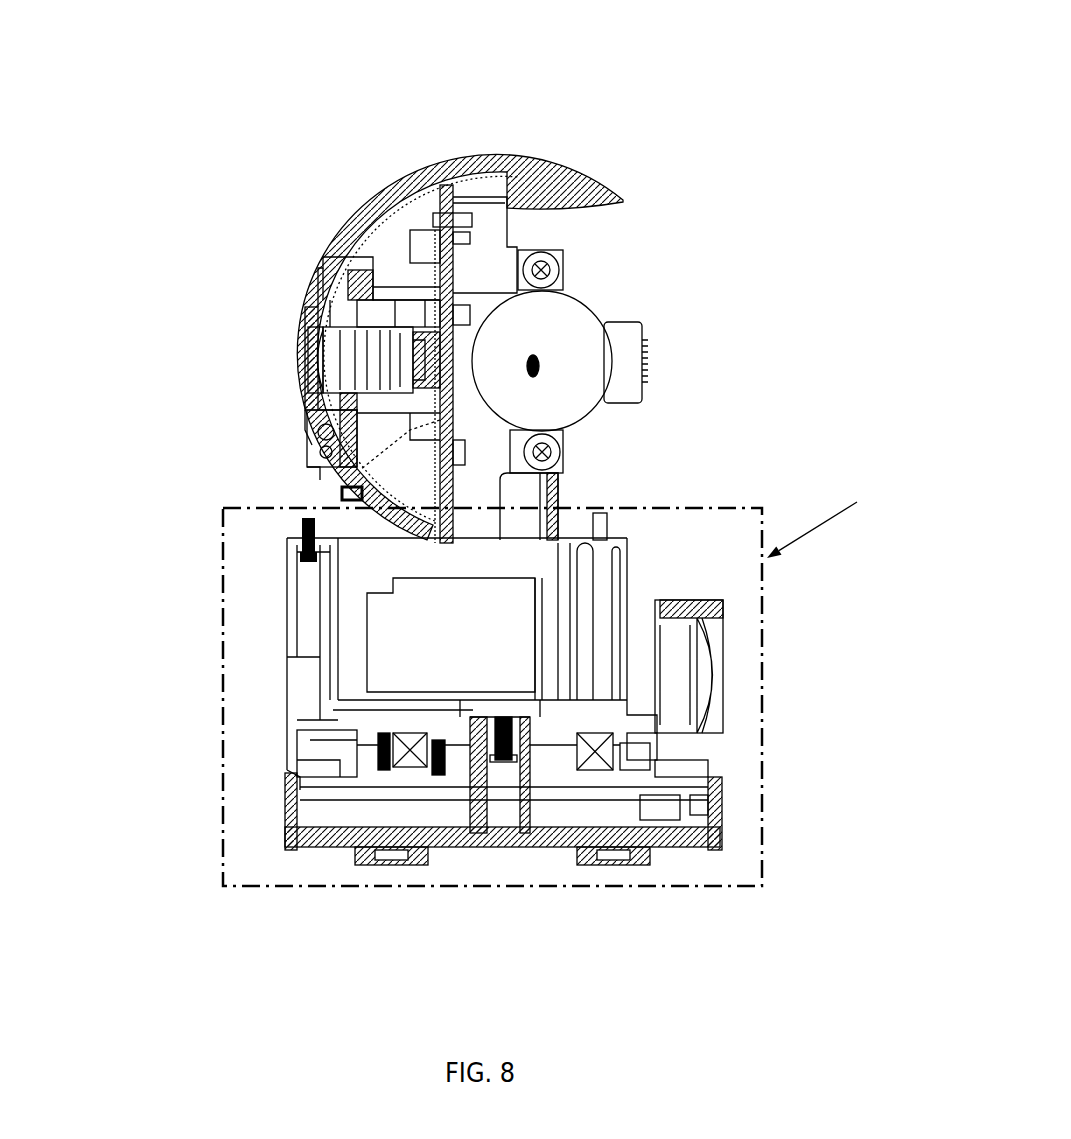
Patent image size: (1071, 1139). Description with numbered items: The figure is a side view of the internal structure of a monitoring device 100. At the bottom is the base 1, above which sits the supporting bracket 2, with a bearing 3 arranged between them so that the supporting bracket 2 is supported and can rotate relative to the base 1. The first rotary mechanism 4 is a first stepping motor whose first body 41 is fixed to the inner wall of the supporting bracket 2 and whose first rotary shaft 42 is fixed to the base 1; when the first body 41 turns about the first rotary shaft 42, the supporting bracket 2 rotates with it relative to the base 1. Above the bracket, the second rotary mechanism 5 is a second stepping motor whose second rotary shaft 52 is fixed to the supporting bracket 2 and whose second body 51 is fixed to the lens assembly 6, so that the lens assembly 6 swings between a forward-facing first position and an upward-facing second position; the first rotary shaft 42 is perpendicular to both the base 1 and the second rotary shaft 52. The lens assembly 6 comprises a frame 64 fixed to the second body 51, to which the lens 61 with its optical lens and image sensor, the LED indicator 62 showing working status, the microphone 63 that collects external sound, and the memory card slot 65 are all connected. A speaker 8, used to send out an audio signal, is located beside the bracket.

The monitoring device 100 is at (582, 130).
The lens assembly 6 is at (343, 162).
The frame 64 is at (353, 213).
The lens 61 is at (322, 270).
The indicator 62 is at (350, 367).
The microphone 63 is at (320, 428).
The memory card slot 65 is at (342, 492).
The second rotary mechanism 5 is at (585, 447).
The second body 51 is at (557, 396).
The second rotary shaft 52 is at (540, 365).
The supporting bracket 2 is at (297, 578).
The first body 41 is at (405, 647).
The bearing 3 is at (367, 748).
The first rotary mechanism 4 is at (445, 661).
The first rotary shaft 42 is at (497, 810).
The base 1 is at (723, 820).
The speaker 8 is at (665, 682).